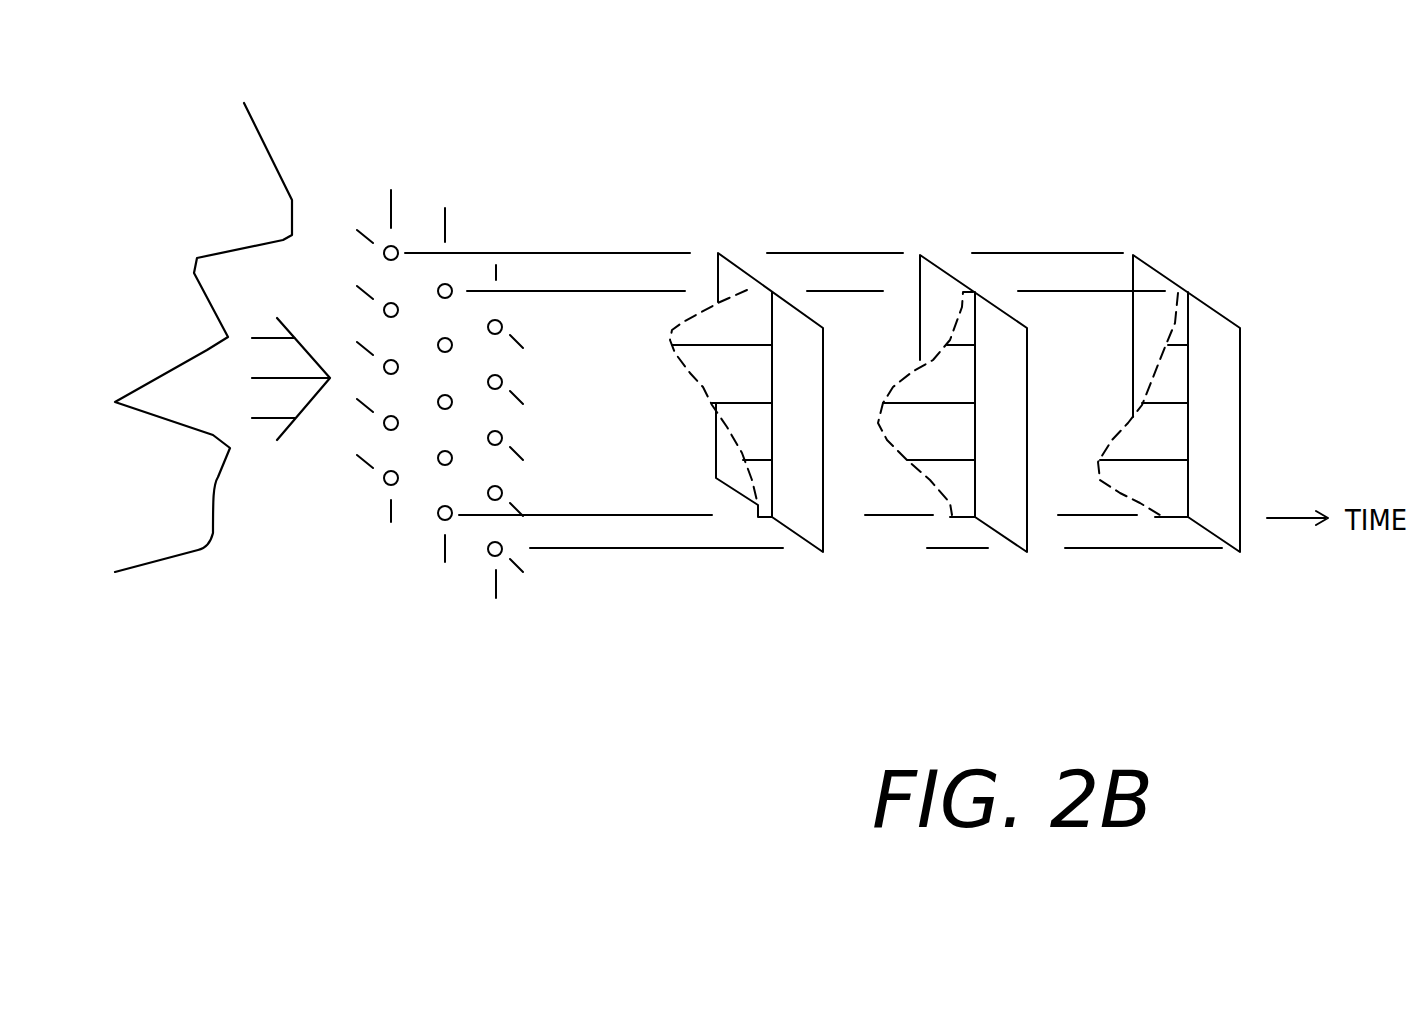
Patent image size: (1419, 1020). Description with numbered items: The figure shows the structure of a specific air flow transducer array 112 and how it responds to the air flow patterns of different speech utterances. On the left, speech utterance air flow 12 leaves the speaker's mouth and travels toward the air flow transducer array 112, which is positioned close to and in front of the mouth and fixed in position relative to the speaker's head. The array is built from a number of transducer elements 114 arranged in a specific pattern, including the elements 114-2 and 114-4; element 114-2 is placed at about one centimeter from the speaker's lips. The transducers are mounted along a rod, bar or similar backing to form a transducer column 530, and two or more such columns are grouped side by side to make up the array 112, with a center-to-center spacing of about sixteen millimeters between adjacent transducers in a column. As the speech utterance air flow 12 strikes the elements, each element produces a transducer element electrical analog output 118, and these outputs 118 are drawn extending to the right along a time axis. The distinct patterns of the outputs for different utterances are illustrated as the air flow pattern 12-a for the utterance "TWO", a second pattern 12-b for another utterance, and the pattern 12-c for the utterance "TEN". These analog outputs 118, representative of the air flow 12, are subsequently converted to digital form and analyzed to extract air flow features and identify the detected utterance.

The speech utterance air flow 12 is at (263, 430).
The air flow transducer array 112 is at (354, 185).
The transducer column 530 is at (447, 190).
The transducer elements 114 is at (390, 485).
The transducer element 114-2 is at (452, 345).
The transducer element 114-4 is at (452, 458).
The transducer element electrical analog outputs 118 is at (900, 472).
The speech utterance air flow pattern for "TWO" 12-a is at (697, 315).
The speech utterance air flow pattern 12-b is at (893, 388).
The speech utterance air flow pattern for "TEN" 12-c is at (1098, 462).